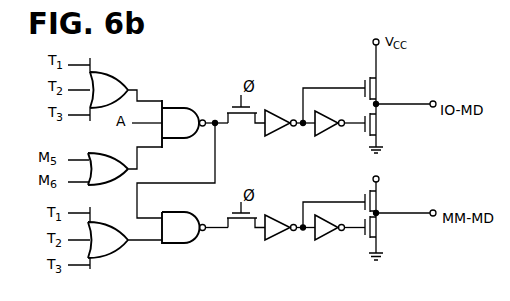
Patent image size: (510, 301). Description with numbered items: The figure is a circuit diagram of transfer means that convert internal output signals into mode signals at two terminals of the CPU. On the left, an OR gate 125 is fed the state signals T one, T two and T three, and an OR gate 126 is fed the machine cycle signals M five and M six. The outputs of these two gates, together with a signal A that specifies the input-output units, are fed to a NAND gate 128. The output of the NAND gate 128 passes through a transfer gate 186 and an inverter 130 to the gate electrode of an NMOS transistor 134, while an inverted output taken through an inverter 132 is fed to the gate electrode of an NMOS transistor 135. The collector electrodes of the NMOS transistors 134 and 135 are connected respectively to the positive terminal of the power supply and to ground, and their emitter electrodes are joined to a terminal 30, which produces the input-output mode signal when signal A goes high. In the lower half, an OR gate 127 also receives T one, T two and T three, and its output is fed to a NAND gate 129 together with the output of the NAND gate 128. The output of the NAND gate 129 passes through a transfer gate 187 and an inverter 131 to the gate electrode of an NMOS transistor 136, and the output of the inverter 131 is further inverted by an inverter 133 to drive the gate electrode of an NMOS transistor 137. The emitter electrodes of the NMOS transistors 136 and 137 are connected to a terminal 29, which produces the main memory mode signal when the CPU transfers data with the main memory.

The OR gate 125 is at (119, 62).
The OR gate 126 is at (113, 155).
The OR gate 127 is at (101, 261).
The NAND gate 128 is at (197, 103).
The NAND gate 129 is at (181, 246).
The inverter 130 is at (284, 106).
The inverter 131 is at (282, 241).
The inverter 132 is at (332, 129).
The inverter 133 is at (332, 238).
The NMOS transistor 134 is at (362, 75).
The NMOS transistor 135 is at (375, 123).
The NMOS transistor 136 is at (367, 188).
The NMOS transistor 137 is at (375, 228).
The transfer gate 186 is at (252, 124).
The transfer gate 187 is at (243, 235).
The terminal 30 is at (431, 101).
The terminal 29 is at (428, 210).